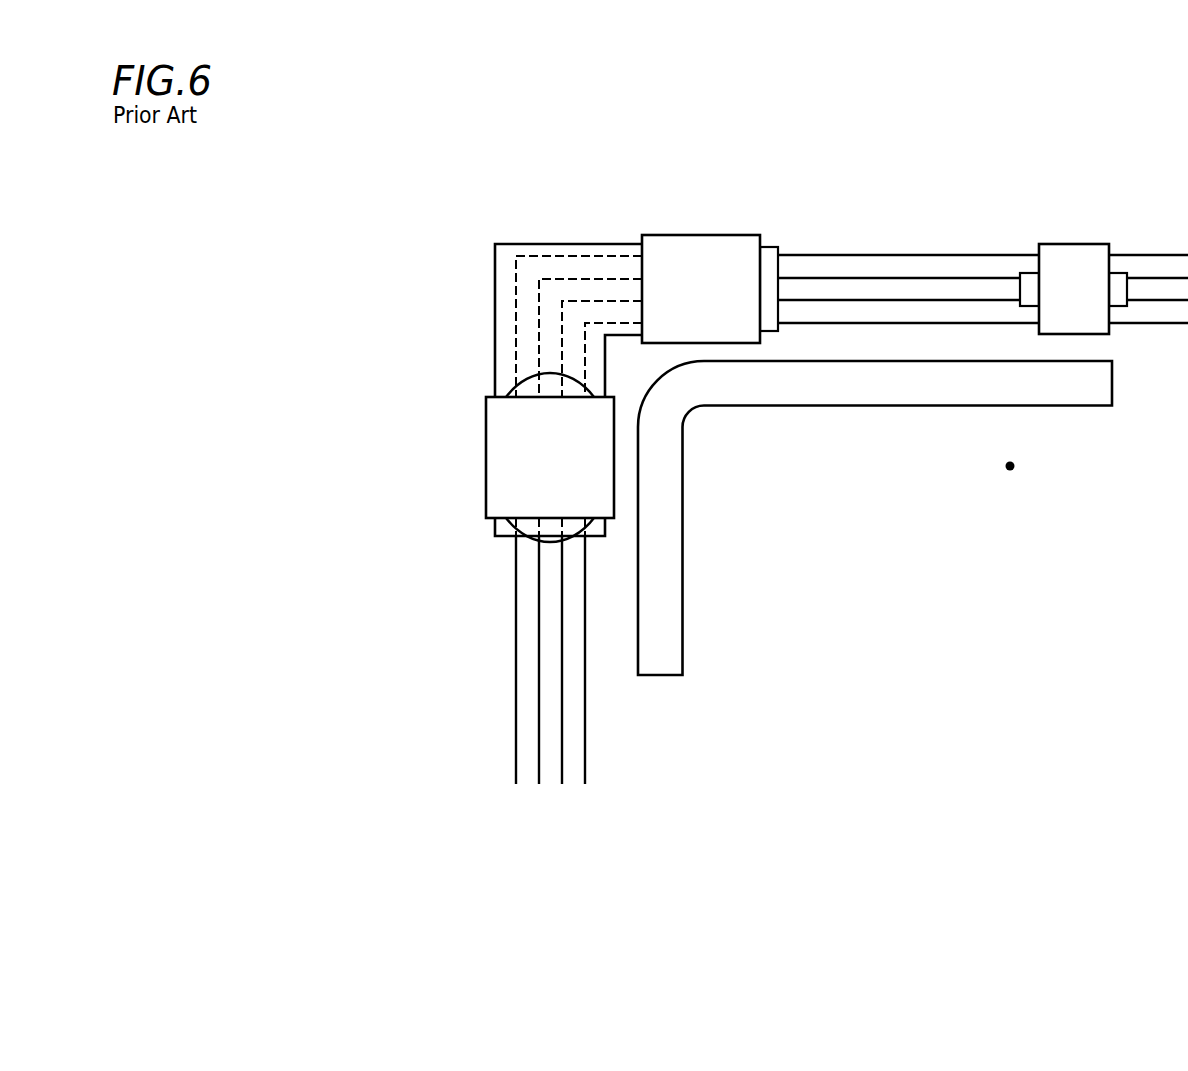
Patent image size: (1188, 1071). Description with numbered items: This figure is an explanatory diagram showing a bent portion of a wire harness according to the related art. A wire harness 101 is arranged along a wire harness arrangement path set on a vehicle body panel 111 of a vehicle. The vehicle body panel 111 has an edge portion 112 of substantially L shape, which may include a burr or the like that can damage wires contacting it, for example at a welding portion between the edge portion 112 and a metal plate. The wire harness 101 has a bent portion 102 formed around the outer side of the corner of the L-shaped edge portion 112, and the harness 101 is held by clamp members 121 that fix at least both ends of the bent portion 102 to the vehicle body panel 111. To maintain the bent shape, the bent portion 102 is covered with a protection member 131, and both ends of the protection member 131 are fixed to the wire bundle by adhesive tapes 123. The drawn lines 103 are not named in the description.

The wire harness 101 is at (927, 240).
The bent portion 102 is at (513, 317).
The cable 103 is at (820, 257).
The vehicle body panel 111 is at (1014, 466).
The edge portion 112 is at (825, 407).
The clamp member 121 is at (1070, 248).
The adhesive tape 123 is at (702, 240).
The protection member 131 is at (563, 243).